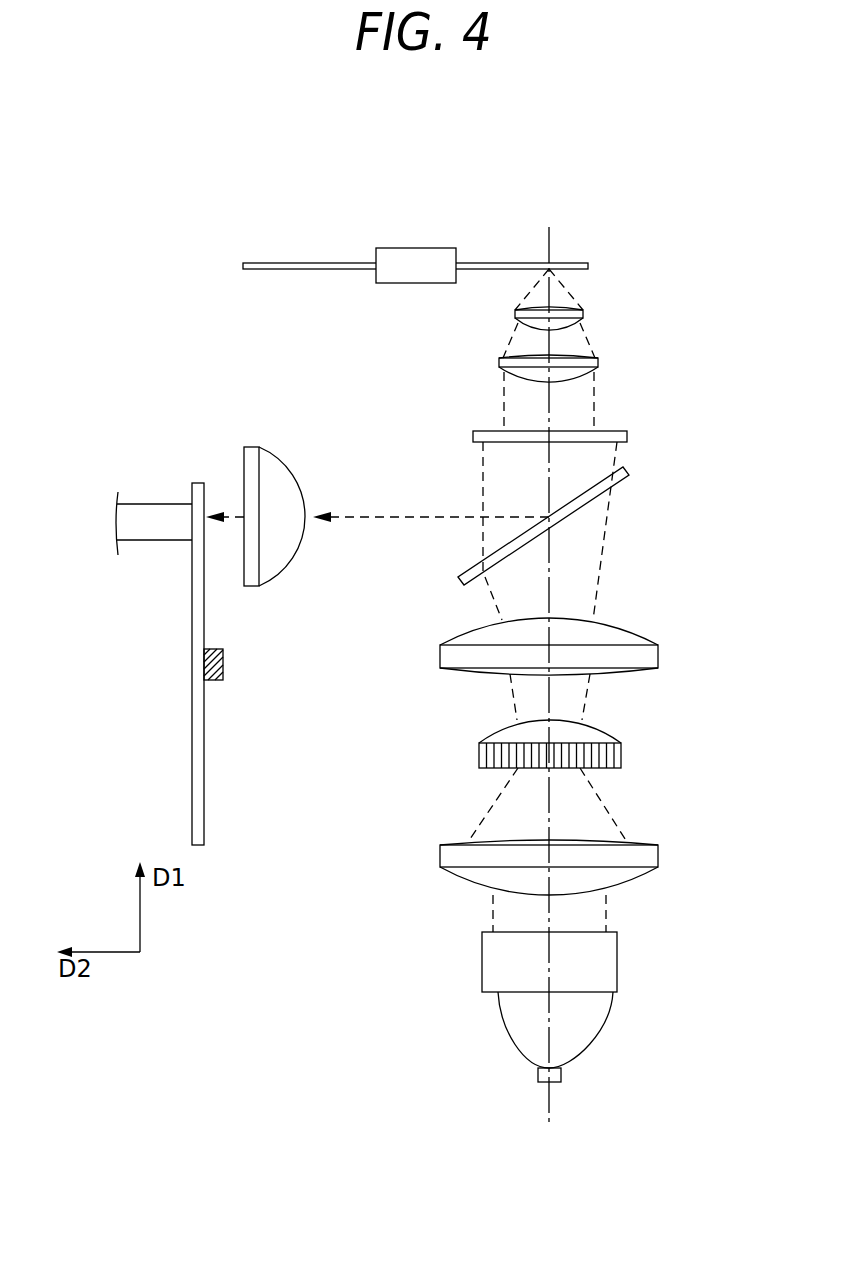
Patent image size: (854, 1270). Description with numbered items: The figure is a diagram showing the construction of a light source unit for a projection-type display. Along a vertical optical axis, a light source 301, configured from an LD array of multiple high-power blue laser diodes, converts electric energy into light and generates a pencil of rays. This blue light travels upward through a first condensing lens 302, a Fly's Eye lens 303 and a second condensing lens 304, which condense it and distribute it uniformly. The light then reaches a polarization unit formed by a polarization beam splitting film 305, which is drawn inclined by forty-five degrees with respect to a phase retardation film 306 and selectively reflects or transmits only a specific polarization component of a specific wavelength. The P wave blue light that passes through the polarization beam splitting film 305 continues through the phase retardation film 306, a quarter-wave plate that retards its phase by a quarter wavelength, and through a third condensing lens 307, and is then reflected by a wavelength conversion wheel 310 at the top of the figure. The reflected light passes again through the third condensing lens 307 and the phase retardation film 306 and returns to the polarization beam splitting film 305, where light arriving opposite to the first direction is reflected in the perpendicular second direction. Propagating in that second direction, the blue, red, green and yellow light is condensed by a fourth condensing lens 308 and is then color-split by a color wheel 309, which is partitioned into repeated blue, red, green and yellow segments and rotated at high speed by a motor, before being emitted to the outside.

The light source 301 is at (617, 962).
The first condensing lens 302 is at (658, 858).
The Fly's Eye lens 303 is at (621, 756).
The second condensing lens 304 is at (658, 657).
The polarization beam splitting film 305 is at (628, 472).
The phase retardation film 306 is at (627, 437).
The third condensing lens 307 is at (603, 302).
The fourth condensing lens 308 is at (264, 452).
The color wheel 309 is at (197, 609).
The wavelength conversion wheel 310 is at (491, 263).